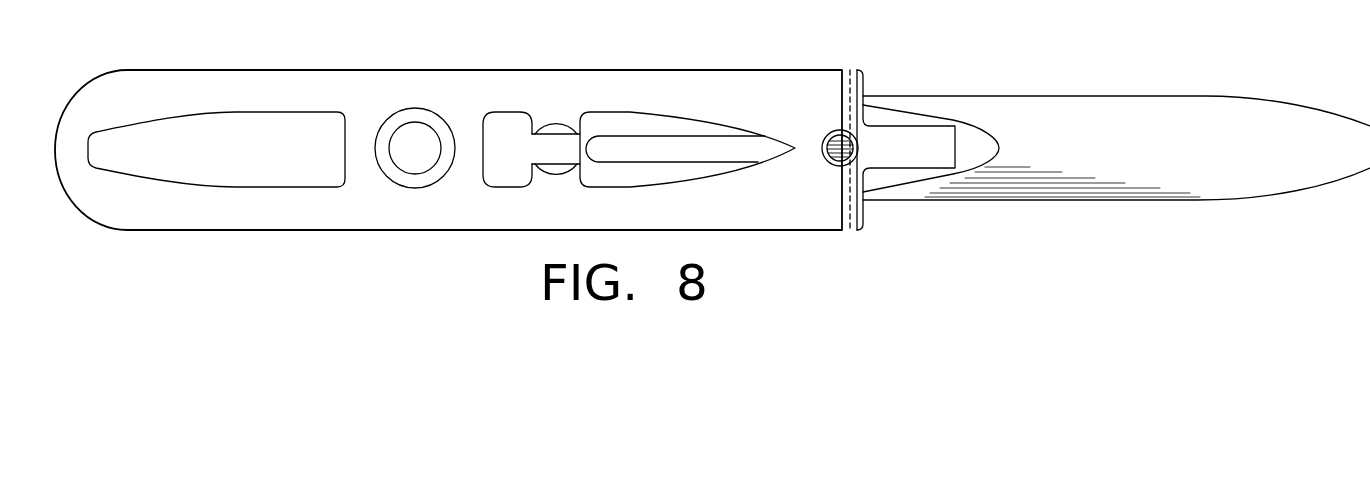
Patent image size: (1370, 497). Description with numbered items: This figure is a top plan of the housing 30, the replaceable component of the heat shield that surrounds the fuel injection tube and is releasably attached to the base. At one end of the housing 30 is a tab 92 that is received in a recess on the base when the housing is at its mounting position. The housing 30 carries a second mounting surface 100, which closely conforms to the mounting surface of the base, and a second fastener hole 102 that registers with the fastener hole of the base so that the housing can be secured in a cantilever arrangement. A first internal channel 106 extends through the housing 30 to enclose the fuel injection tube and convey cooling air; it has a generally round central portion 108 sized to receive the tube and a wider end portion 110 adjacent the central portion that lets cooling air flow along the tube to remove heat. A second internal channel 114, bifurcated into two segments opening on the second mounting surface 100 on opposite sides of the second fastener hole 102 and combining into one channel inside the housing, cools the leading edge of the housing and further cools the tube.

The housing 30 is at (748, 70).
The tab 92 is at (892, 124).
The second mounting surface 100 is at (487, 102).
The second fastener hole 102 is at (405, 108).
The first internal channel 106 is at (620, 108).
The central portion 108 is at (556, 178).
The end portion 110 is at (598, 113).
The second internal channel 114 is at (245, 106).